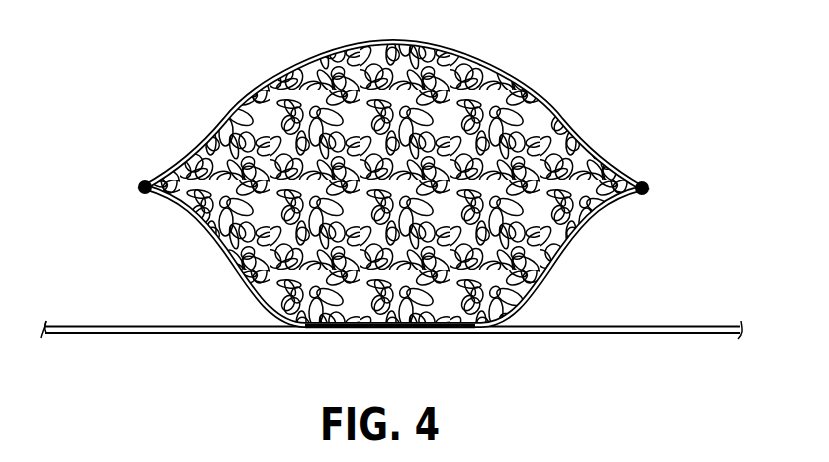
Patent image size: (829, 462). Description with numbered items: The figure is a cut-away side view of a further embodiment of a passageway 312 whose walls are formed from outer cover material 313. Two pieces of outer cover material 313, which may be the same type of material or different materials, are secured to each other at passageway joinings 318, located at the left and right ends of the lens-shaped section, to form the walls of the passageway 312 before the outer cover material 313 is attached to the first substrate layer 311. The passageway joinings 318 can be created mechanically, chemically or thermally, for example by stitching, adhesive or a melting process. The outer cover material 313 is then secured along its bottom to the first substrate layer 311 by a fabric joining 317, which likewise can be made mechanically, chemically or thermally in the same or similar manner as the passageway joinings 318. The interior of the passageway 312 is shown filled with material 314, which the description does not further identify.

The first substrate layer 311 is at (547, 333).
The passageway 312 is at (586, 126).
The outer cover material 313 is at (545, 97).
The fibrous filling material 314 is at (248, 232).
The fabric joining 317 is at (398, 332).
The passageway joinings 318 is at (145, 185).